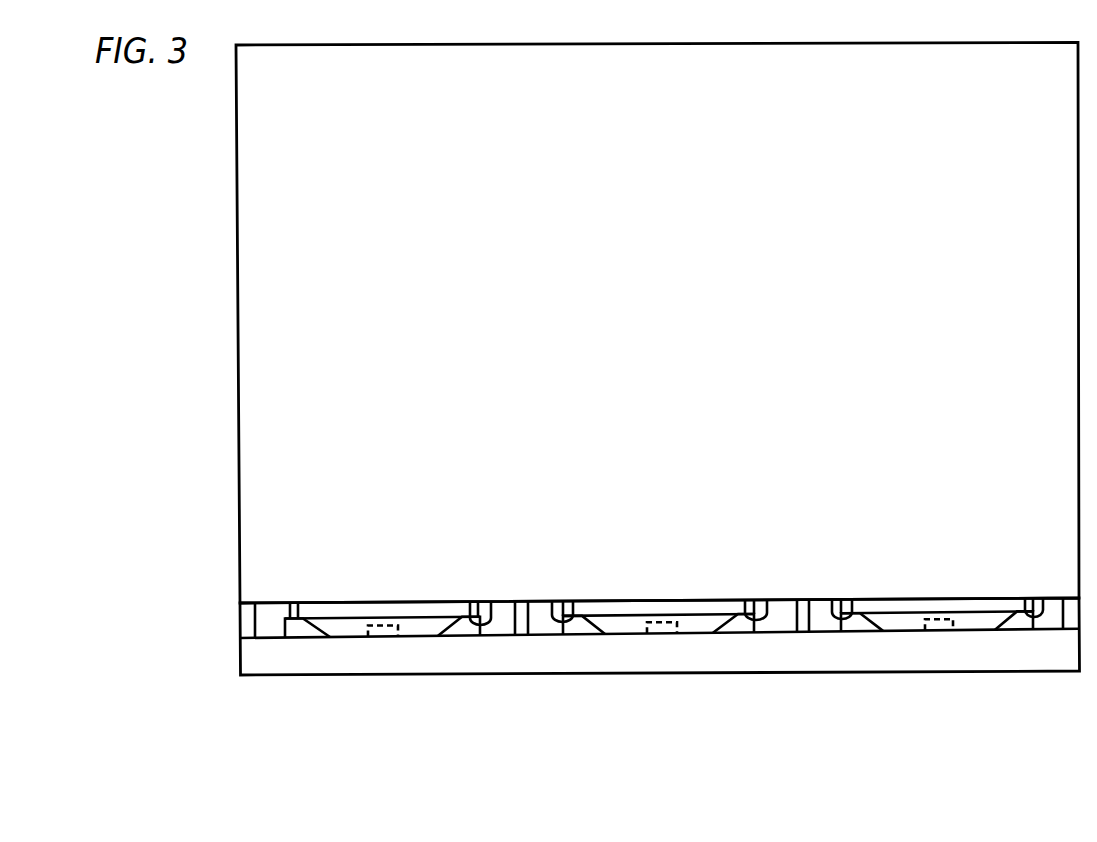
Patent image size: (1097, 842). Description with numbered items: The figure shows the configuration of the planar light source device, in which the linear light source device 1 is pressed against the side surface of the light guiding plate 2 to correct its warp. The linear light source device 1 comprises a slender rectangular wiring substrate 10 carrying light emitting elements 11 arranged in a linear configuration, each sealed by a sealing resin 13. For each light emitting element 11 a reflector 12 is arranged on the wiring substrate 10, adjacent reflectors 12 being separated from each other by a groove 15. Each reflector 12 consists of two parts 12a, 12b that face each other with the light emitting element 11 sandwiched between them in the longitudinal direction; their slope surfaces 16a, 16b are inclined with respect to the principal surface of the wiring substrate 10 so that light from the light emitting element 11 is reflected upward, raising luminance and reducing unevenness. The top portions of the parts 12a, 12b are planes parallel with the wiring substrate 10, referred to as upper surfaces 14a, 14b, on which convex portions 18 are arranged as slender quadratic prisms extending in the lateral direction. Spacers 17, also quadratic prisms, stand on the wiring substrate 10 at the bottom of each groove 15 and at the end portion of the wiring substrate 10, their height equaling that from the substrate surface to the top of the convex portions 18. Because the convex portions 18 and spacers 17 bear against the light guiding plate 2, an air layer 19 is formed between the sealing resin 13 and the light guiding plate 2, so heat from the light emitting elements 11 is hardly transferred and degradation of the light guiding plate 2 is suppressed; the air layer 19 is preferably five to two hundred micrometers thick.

The linear light source device 1 is at (226, 618).
The light guiding plate 2 is at (250, 304).
The wiring substrate 10 is at (570, 663).
The light emitting element 11 is at (385, 625).
The reflector 12 is at (422, 742).
The part of reflector 12a is at (455, 628).
The part of reflector 12b is at (300, 628).
The sealing resin 13 is at (350, 622).
The upper surface 14a is at (489, 604).
The upper surface 14b is at (555, 601).
The groove 15 is at (270, 625).
The slope surface 16a is at (440, 628).
The slope surface 16b is at (323, 618).
The spacer 17 is at (248, 625).
The convex portion 18 is at (293, 602).
The air layer 19 is at (415, 607).